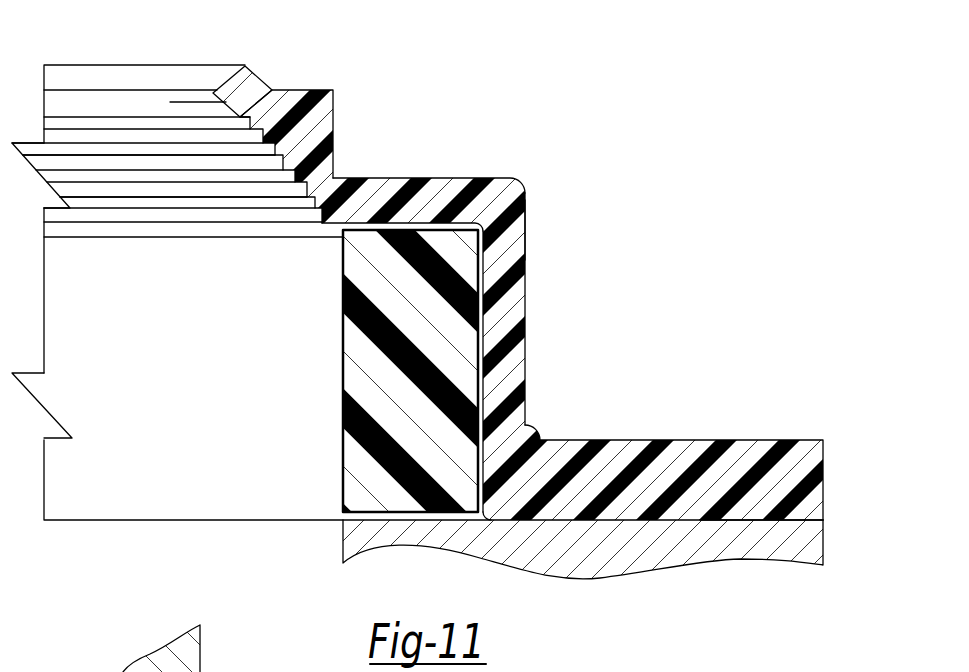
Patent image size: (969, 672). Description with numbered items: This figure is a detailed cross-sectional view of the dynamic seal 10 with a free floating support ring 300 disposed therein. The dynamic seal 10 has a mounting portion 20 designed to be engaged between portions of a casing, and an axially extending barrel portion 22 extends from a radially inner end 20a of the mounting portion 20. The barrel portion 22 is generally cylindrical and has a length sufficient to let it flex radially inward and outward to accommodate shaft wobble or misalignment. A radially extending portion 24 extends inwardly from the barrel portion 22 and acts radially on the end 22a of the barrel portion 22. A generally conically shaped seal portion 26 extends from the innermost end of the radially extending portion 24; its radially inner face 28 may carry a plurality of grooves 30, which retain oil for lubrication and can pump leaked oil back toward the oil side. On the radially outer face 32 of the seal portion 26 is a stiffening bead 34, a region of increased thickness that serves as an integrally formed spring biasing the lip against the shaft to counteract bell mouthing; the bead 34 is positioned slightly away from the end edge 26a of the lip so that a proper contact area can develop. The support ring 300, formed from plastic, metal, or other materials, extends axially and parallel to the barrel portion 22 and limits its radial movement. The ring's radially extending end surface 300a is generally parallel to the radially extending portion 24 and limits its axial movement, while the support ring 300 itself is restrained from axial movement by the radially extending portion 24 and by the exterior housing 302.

The dynamic seal 10 is at (562, 102).
The mounting portion 20 is at (742, 447).
The radially inner end of the mounting portion 20a is at (747, 510).
The axially extending barrel portion 22 is at (518, 297).
The end of the barrel portion 22a is at (522, 232).
The radially extending portion 24 is at (467, 188).
The conically shaped seal portion 26 is at (308, 97).
The end edge of the lip 26a is at (177, 671).
The radially inner face 28 is at (283, 165).
The grooves 30 is at (272, 147).
The radially outer face 32 is at (255, 83).
The stiffening bead 34 is at (328, 115).
The free floating support ring 300 is at (342, 398).
The radially extending end surface 300a is at (363, 232).
The exterior housing 302 is at (692, 562).